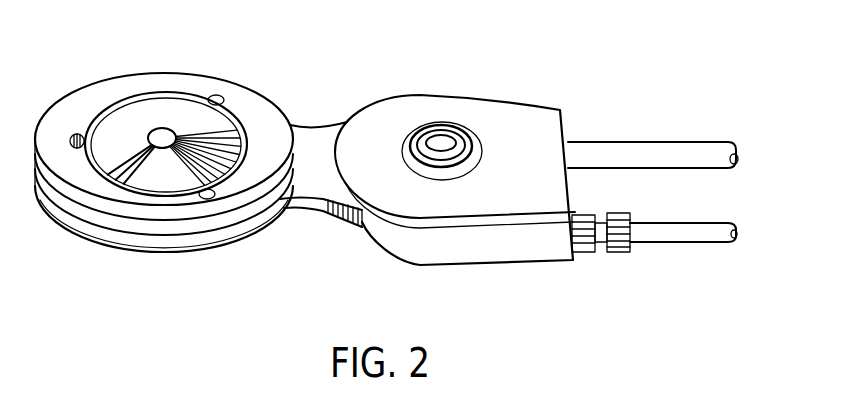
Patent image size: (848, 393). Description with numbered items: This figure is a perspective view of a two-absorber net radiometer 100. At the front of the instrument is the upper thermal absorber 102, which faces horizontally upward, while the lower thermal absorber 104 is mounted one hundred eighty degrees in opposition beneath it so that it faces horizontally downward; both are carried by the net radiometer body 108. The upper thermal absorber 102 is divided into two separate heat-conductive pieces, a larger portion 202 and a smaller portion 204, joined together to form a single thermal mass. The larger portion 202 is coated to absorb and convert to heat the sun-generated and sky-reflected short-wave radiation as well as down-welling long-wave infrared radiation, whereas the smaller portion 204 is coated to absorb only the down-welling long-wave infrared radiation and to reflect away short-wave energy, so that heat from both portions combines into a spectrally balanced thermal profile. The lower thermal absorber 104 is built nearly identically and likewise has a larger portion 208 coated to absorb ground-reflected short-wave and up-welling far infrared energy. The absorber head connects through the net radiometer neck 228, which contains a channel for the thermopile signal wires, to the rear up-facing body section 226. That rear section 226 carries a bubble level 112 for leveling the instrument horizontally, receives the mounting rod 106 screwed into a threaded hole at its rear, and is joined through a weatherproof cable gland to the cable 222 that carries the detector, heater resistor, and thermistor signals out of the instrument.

The net radiometer 100 is at (163, 129).
The upper thermal absorber 102 is at (193, 92).
The lower thermal absorber 104 is at (180, 252).
The mounting rod 106 is at (680, 138).
The net radiometer body 108 is at (117, 220).
The bubble level 112 is at (443, 123).
The larger portion 202 is at (215, 123).
The smaller portion 204 is at (157, 130).
The larger portion 208 is at (157, 252).
The cable 222 is at (685, 245).
The rear up-facing body section 226 is at (550, 110).
The net radiometer neck 228 is at (303, 212).